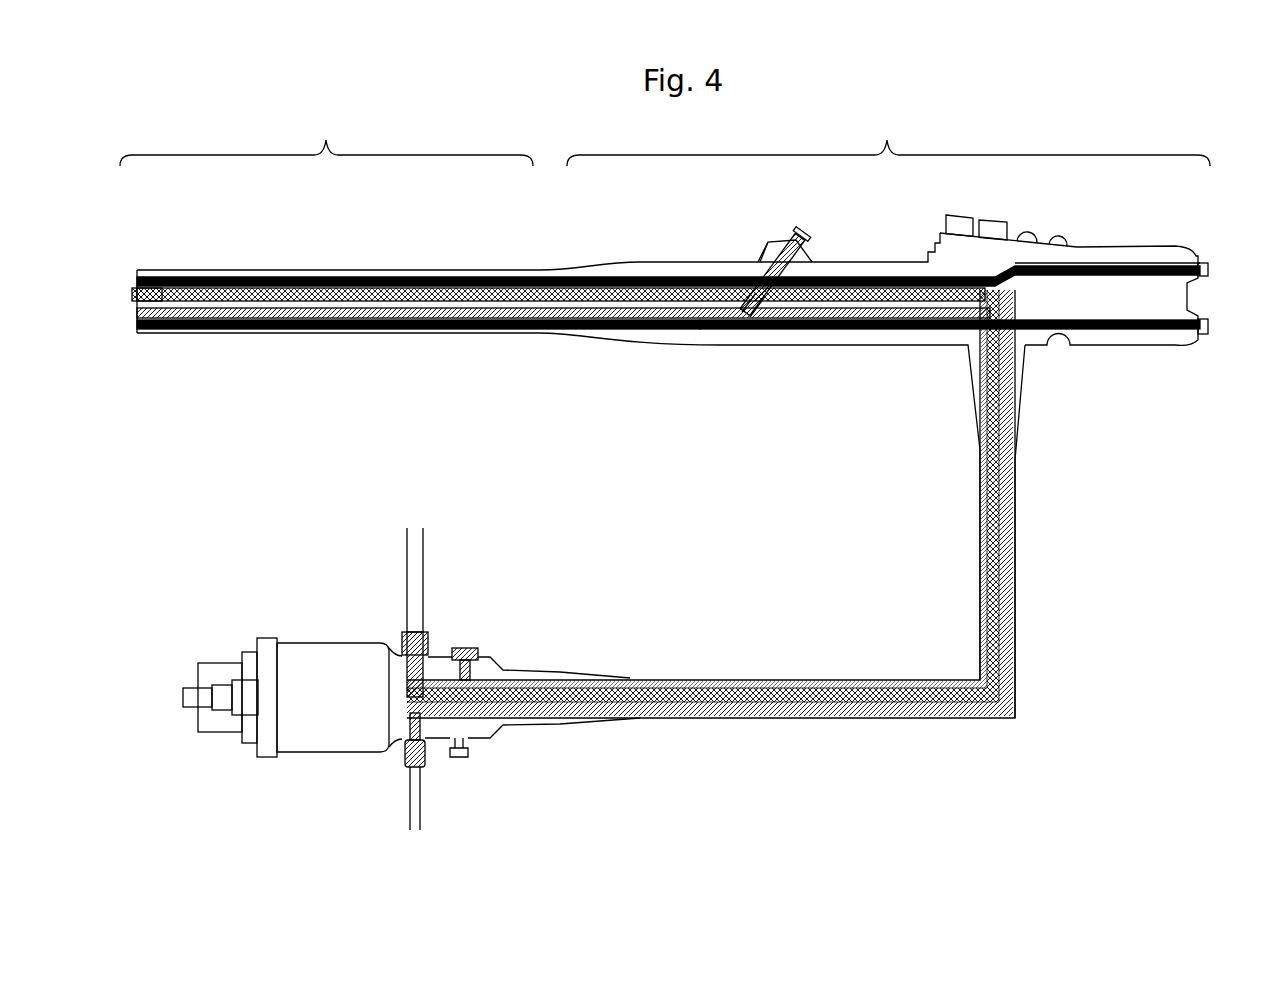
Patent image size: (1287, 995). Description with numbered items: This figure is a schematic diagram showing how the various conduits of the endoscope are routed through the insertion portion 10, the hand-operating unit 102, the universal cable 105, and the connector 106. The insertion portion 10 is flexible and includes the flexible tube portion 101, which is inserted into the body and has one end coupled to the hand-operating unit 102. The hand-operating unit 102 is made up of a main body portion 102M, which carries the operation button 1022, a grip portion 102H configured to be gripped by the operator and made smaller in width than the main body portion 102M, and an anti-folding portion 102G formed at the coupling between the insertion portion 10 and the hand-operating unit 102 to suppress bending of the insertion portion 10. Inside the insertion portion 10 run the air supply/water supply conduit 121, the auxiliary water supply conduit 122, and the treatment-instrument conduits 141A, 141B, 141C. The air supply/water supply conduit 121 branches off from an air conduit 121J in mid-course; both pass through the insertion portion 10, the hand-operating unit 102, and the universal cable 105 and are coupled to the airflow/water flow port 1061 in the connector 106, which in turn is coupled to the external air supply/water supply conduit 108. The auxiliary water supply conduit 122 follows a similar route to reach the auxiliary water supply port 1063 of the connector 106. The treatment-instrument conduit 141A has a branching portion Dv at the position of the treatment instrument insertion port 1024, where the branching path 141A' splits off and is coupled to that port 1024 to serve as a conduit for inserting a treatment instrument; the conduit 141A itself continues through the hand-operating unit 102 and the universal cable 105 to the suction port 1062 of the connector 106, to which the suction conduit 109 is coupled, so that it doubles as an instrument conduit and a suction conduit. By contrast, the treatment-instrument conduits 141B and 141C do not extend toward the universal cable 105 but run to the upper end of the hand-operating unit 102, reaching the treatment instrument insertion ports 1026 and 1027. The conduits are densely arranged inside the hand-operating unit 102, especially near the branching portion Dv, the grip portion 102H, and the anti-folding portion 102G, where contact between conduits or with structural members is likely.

The insertion portion 10 is at (326, 138).
The hand-operating unit 102 is at (888, 138).
The flexible tube portion 101 is at (378, 270).
The air supply/water supply conduit 121 is at (272, 292).
The air conduit 121J is at (205, 292).
The auxiliary water supply conduit 122 is at (222, 310).
The treatment-instrument conduit 141A is at (418, 355).
The treatment-instrument conduit 141B is at (460, 285).
The treatment-instrument conduit 141C is at (773, 332).
The branching path 141A' is at (731, 232).
The anti-folding portion 102G is at (590, 262).
The grip portion 102H is at (898, 346).
The main body portion 102M is at (1128, 245).
The operation button 1022 is at (1077, 228).
The treatment instrument insertion port 1024 is at (770, 240).
The treatment instrument insertion port 1026 is at (1208, 263).
The treatment instrument insertion port 1027 is at (1208, 334).
The branching portion Dv is at (738, 318).
The universal cable 105 is at (1018, 526).
The connector 106 is at (322, 643).
The airflow/water flow port 1061 is at (428, 636).
The suction port 1062 is at (426, 760).
The auxiliary water supply port 1063 is at (470, 648).
The air supply/water supply conduit 108 is at (406, 547).
The suction conduit 109 is at (406, 810).